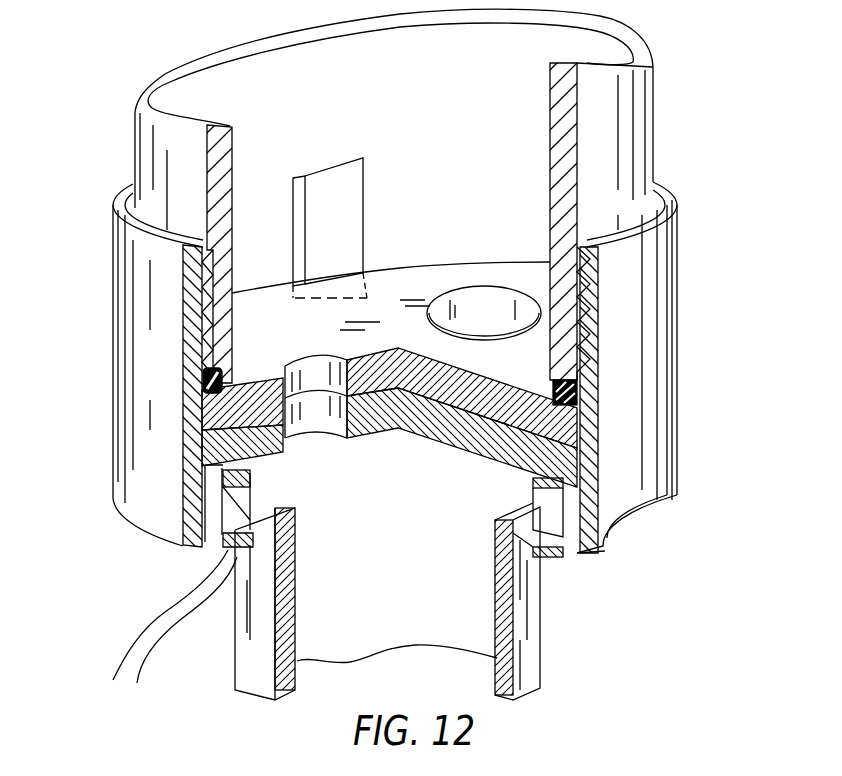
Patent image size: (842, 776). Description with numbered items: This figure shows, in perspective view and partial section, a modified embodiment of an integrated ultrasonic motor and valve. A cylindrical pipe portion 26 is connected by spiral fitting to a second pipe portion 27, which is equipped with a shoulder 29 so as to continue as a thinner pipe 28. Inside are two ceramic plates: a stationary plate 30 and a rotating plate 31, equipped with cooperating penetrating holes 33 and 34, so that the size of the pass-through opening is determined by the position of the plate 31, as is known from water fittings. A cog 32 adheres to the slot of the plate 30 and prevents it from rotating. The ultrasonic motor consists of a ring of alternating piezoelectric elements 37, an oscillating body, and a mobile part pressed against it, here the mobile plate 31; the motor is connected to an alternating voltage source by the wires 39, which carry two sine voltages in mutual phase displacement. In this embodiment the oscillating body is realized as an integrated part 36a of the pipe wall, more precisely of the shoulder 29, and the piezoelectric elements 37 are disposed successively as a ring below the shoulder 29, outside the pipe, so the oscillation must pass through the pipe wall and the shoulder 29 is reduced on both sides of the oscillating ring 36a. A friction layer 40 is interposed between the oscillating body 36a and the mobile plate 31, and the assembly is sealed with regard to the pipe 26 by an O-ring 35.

The cylindrical pipe portion 26 is at (627, 152).
The second pipe portion 27 is at (637, 372).
The thinner pipe 28 is at (525, 662).
The shoulder 29 is at (580, 556).
The stationary ceramic plate 30 is at (400, 262).
The rotating ceramic plate 31 is at (490, 435).
The cog 32 is at (343, 207).
The penetrating holes 33 is at (485, 315).
The penetrating holes 34 is at (320, 408).
The O-ring 35 is at (205, 385).
The oscillating ring 36a is at (575, 548).
The piezoelectric elements 37 is at (577, 560).
The wires 39 is at (140, 638).
The friction layer 40 is at (252, 490).